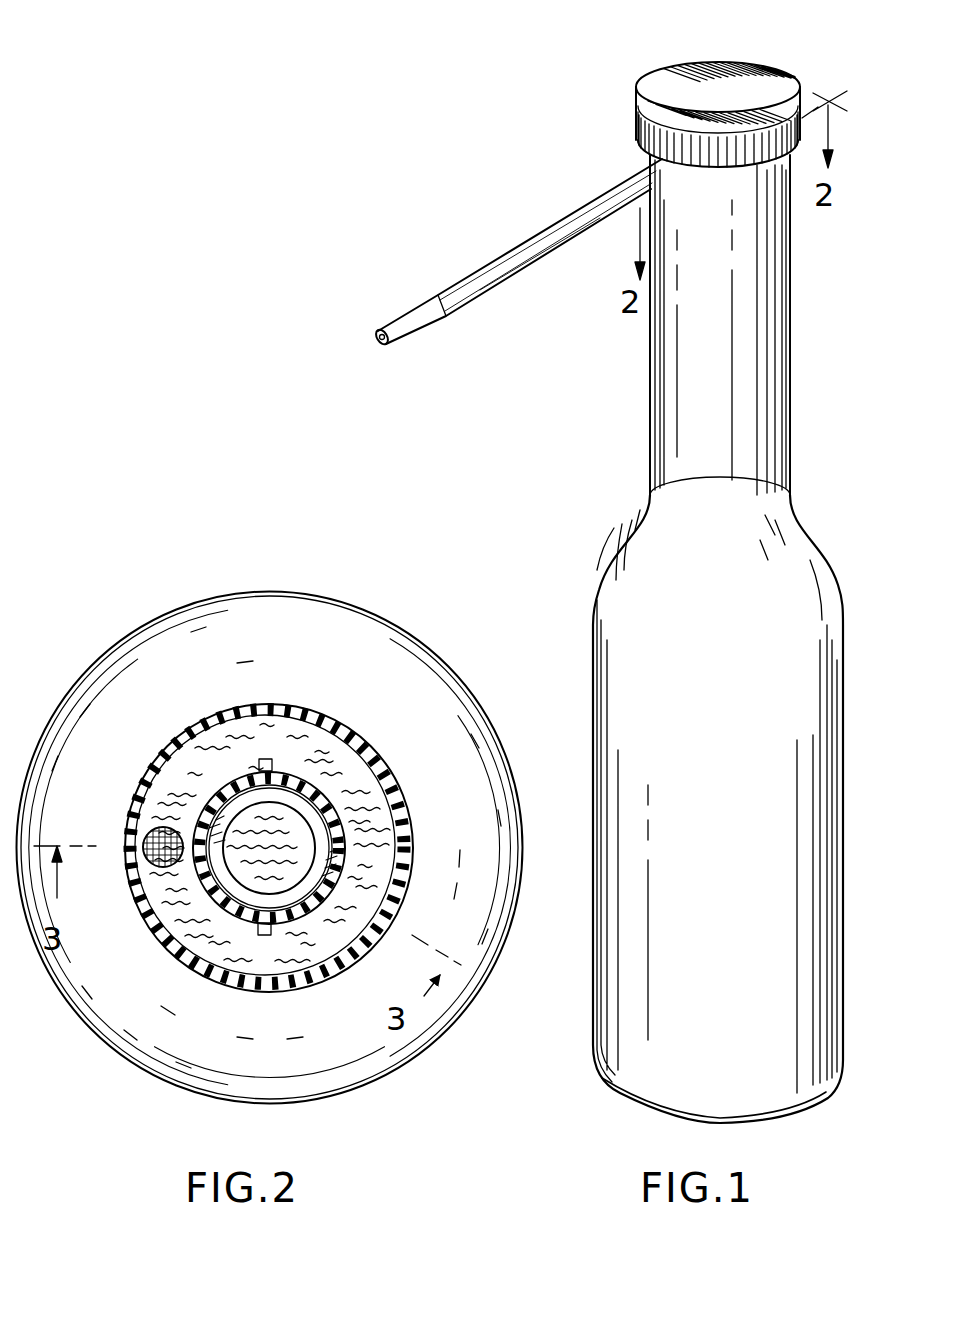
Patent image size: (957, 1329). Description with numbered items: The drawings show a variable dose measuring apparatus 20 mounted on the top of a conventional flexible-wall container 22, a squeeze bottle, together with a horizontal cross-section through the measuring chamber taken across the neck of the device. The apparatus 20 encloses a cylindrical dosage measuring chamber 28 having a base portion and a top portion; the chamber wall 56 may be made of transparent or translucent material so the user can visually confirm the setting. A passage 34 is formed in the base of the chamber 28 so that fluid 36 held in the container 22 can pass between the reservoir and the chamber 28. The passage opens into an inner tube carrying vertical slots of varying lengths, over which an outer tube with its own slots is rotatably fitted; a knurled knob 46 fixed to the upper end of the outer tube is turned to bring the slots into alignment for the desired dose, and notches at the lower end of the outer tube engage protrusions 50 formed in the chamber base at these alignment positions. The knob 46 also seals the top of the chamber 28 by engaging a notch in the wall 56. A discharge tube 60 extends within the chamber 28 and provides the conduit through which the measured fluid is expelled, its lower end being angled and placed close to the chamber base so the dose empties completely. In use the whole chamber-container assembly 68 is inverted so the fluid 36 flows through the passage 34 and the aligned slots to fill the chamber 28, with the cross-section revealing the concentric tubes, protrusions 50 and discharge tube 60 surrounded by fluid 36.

In FIG. 1, the apparatus 20 is at (798, 340).
In FIG. 1, the flexible-wall container 22 is at (606, 622).
In FIG. 2, the flexible-wall container 22 is at (392, 1061).
In FIG. 2, the dosage measuring chamber 28 is at (305, 732).
In FIG. 2, the passage 34 is at (233, 903).
In FIG. 2, the fluid 36 is at (190, 757).
In FIG. 1, the knurled knob 46 is at (729, 78).
In FIG. 2, the protrusions 50 is at (265, 758).
In FIG. 1, the upper wall 56 is at (652, 382).
In FIG. 1, the discharge tube 60 is at (628, 183).
In FIG. 2, the discharge tube 60 is at (146, 815).
In FIG. 1, the chamber-container assembly 68 is at (608, 532).